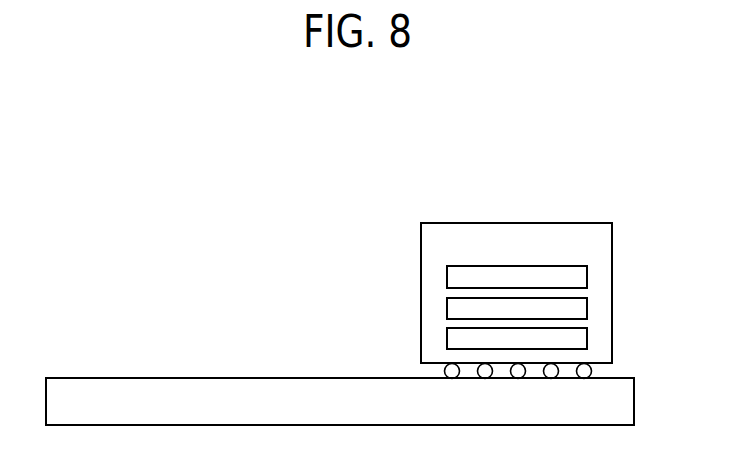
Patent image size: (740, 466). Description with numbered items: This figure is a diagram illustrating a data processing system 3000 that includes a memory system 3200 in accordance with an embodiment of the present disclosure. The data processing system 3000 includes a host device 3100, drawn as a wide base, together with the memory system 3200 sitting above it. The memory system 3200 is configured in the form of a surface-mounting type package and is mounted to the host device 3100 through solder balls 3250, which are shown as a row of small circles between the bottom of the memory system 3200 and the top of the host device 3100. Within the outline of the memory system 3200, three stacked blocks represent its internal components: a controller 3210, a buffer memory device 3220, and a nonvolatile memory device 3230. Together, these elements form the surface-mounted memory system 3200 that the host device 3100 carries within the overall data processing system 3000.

The data processing system 3000 is at (180, 198).
The host device 3100 is at (340, 401).
The memory system 3200 is at (516, 293).
The controller 3210 is at (517, 278).
The buffer memory device 3220 is at (517, 309).
The nonvolatile memory device 3230 is at (517, 340).
The solder balls 3250 is at (602, 370).